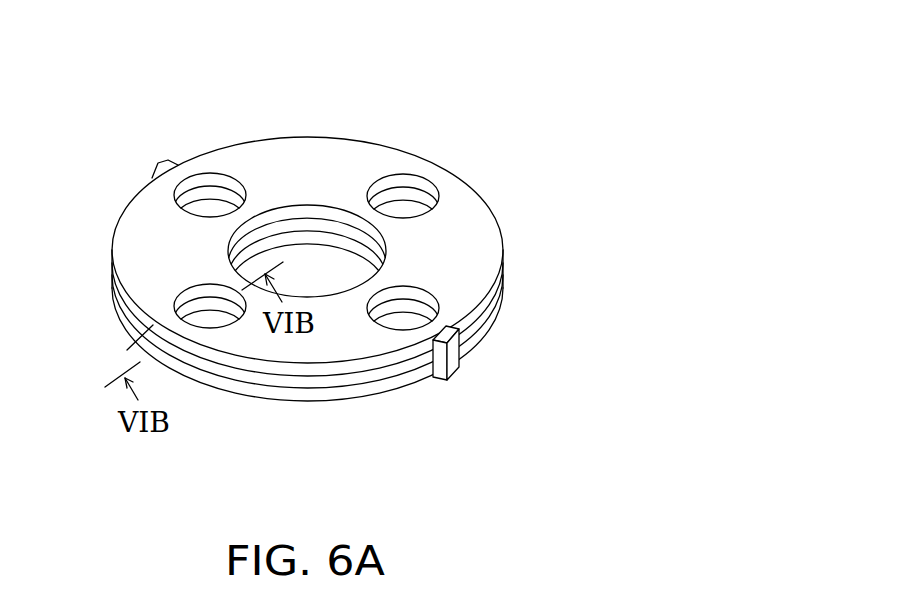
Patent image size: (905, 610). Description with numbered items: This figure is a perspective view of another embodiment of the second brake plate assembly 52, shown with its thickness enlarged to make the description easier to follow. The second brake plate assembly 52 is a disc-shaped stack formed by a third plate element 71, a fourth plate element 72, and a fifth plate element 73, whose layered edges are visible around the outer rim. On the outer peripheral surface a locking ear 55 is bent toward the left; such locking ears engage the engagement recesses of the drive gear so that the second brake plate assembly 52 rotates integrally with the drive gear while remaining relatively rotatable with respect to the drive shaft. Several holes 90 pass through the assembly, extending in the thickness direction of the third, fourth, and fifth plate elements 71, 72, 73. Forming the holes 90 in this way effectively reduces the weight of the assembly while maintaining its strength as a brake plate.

The second brake plate assembly 52 is at (528, 136).
The locking ear 55 is at (456, 366).
The third plate element 71 is at (246, 375).
The fourth plate element 72 is at (277, 397).
The fifth plate element 73 is at (129, 349).
The hole 90 is at (207, 210).